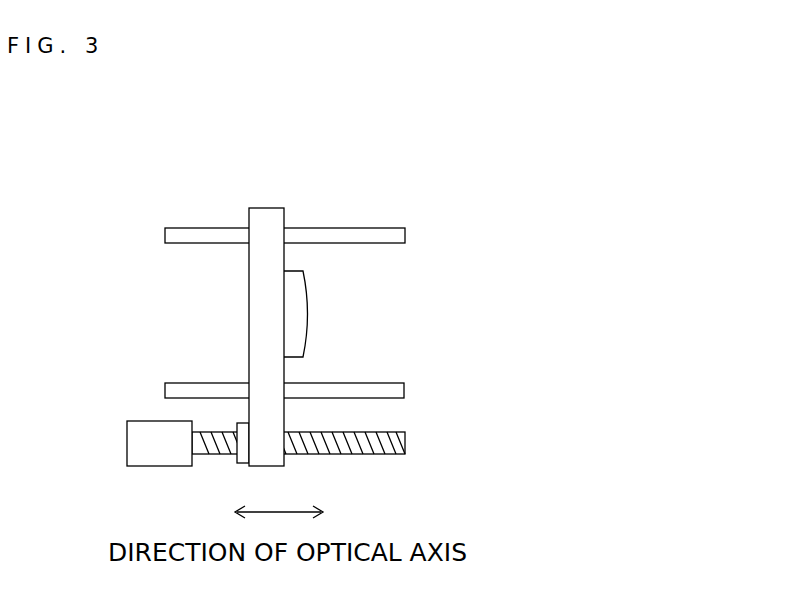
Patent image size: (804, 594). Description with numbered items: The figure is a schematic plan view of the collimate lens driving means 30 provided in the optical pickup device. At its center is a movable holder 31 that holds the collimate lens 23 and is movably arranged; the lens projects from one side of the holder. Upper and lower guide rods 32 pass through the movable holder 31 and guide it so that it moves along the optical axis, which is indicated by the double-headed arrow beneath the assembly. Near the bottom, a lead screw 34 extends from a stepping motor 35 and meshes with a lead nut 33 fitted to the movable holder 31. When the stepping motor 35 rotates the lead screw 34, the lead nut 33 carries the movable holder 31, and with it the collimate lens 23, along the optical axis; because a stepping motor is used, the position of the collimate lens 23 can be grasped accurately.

The collimate lens driving means 30 is at (613, 136).
The movable holder 31 is at (273, 208).
The guide rod 32 is at (358, 230).
The collimate lens 23 is at (307, 315).
The lead nut 33 is at (232, 461).
The lead screw 34 is at (406, 438).
The stepping motor 35 is at (138, 421).